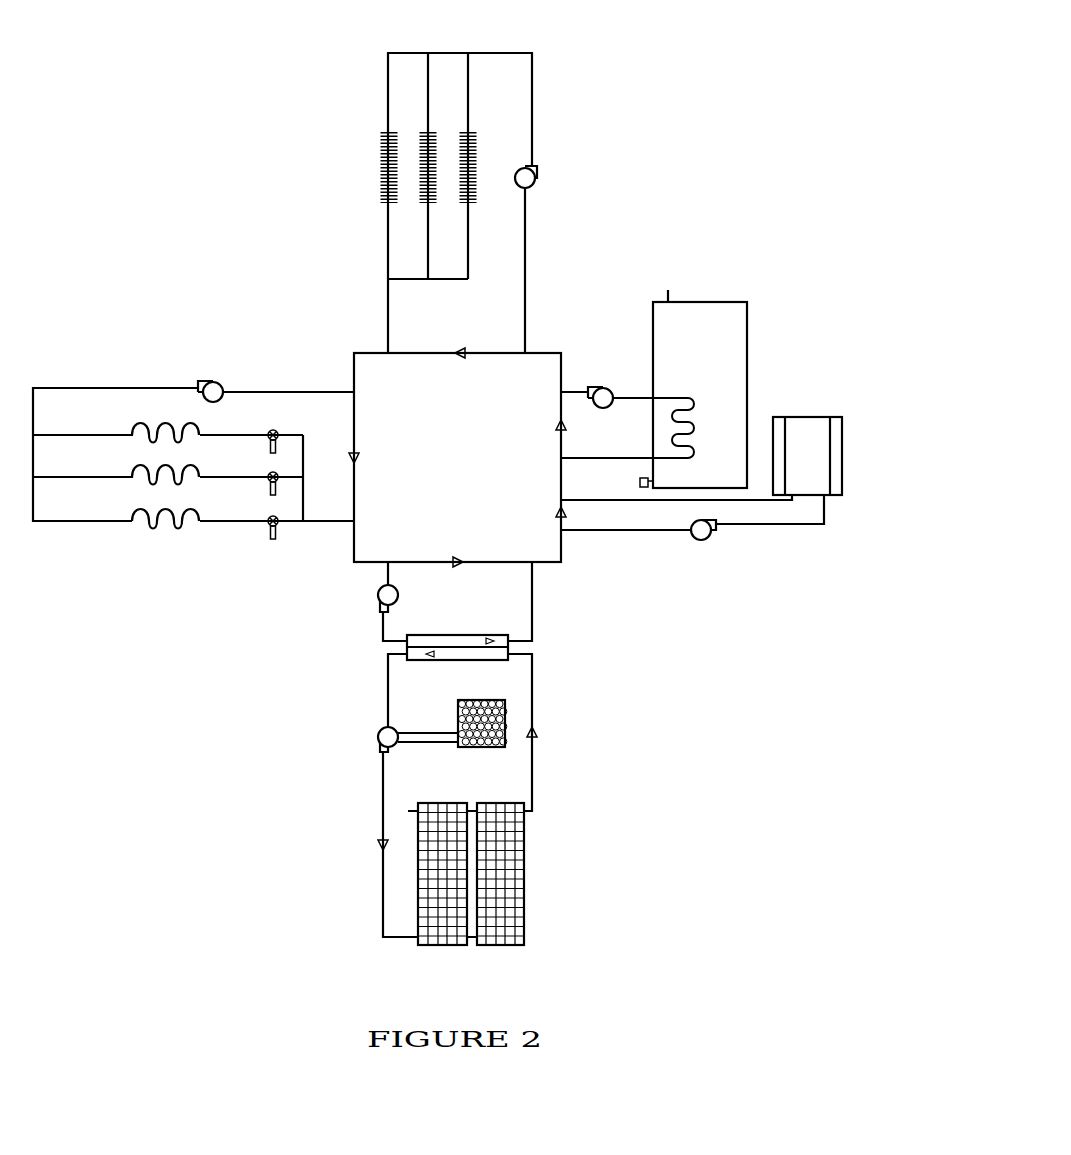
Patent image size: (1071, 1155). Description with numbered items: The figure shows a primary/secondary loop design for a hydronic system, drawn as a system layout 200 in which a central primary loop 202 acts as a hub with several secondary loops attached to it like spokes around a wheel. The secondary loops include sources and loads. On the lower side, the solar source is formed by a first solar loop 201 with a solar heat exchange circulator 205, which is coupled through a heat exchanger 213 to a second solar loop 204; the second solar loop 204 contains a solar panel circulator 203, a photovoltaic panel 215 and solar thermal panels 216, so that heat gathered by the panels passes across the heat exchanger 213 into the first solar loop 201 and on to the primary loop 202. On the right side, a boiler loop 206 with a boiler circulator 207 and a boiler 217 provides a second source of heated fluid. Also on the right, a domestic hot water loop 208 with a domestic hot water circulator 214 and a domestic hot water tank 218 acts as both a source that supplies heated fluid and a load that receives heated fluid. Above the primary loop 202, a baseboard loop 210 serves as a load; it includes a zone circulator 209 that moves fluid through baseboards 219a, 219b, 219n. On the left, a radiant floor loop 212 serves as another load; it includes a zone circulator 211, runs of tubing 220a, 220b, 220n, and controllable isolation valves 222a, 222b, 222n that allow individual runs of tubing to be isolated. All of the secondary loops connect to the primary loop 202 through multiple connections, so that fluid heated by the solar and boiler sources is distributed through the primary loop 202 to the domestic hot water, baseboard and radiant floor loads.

The system layout 200 is at (770, 143).
The first solar loop 201 is at (533, 582).
The primary loop 202 is at (443, 501).
The solar panel circulator 203 is at (377, 742).
The second solar loop 204 is at (533, 768).
The solar heat exchange circulator 205 is at (380, 593).
The boiler loop 206 is at (630, 530).
The boiler circulator 207 is at (711, 535).
The domestic hot water loop 208 is at (593, 388).
The zone circulator 209 is at (537, 177).
The baseboard loop 210 is at (527, 303).
The zone circulator 211 is at (213, 382).
The radiant floor loop 212 is at (78, 388).
The heat exchanger 213 is at (508, 647).
The domestic hot water circulator 214 is at (605, 386).
The photovoltaic panel 215 is at (505, 703).
The solar thermal panels 216 is at (525, 875).
The boiler 217 is at (842, 483).
The domestic hot water tank 218 is at (700, 302).
The baseboard 219a is at (388, 132).
The baseboard 219b is at (428, 132).
The baseboard 219n is at (468, 132).
The tubing 220a is at (132, 440).
The tubing 220b is at (132, 480).
The tubing 220n is at (132, 524).
The controllable isolation valve 222a is at (270, 447).
The controllable isolation valve 222b is at (270, 488).
The controllable isolation valve 222n is at (270, 531).